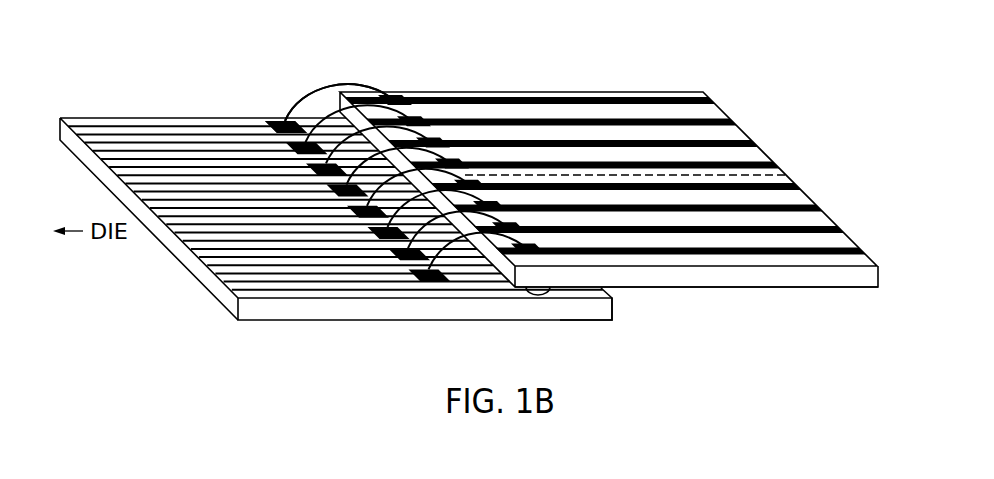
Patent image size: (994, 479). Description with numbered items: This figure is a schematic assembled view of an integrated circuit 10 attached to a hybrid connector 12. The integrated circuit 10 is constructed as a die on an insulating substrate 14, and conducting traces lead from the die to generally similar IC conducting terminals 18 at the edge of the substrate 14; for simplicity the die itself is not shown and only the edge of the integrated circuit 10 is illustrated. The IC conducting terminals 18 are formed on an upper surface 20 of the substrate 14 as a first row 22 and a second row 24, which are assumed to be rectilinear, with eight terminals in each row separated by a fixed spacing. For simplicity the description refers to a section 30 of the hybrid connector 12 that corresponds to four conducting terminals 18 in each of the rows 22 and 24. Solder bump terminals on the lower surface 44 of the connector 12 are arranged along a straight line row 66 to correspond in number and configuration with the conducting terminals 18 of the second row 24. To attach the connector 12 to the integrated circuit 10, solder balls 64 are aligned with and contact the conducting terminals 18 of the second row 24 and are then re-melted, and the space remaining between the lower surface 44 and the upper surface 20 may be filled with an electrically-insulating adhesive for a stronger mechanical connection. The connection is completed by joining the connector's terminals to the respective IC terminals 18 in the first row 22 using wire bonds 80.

The integrated circuit 10 is at (110, 150).
The hybrid connector 12 is at (679, 92).
The insulating substrate 14 is at (283, 322).
The IC conducting terminals 18 is at (388, 237).
The upper surface 20 is at (180, 137).
The first row 22 is at (258, 101).
The second row 24 is at (573, 332).
The section 30 is at (808, 215).
The lower surface 44 is at (817, 305).
The solder balls 64 is at (557, 290).
The straight line row 66 is at (322, 81).
The wire bonds 80 is at (358, 88).